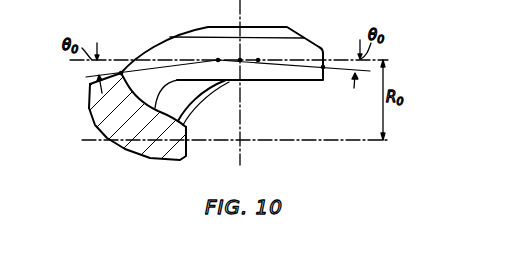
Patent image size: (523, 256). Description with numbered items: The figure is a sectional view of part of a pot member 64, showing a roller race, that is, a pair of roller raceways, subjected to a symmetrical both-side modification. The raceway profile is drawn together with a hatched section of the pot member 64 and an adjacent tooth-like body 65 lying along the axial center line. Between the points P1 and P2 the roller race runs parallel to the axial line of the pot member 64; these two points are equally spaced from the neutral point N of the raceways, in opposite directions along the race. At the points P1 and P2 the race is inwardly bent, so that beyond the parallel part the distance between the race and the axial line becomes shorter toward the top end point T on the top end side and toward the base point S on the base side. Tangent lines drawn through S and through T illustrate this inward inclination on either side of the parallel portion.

The pot member 64 is at (88, 106).
The cutting tooth 65 is at (303, 48).
The base point S is at (124, 75).
The point P1 is at (259, 62).
The point P2 is at (219, 62).
The neutral point N is at (243, 58).
The top end point T is at (325, 69).